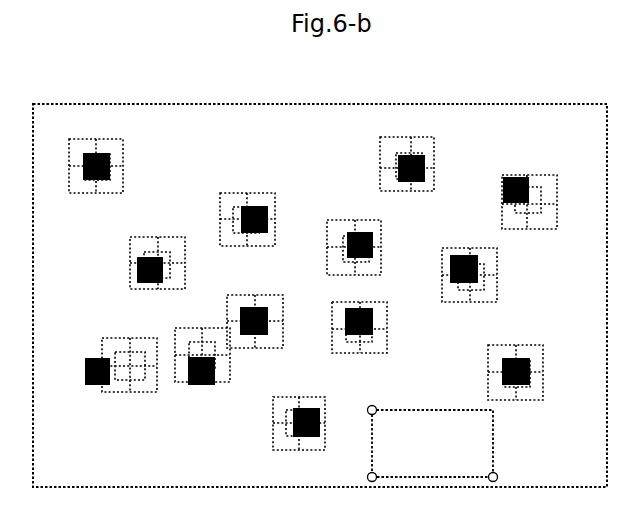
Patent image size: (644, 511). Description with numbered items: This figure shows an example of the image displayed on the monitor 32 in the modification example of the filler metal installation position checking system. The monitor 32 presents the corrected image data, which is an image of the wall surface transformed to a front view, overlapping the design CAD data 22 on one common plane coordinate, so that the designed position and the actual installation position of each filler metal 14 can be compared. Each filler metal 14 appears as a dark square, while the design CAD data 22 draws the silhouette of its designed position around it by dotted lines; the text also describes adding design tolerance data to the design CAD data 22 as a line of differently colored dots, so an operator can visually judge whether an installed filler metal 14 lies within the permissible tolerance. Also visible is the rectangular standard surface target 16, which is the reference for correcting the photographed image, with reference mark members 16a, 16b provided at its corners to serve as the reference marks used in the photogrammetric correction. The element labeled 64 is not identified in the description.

The monitor 32 is at (398, 104).
The design CAD data 22 is at (108, 356).
The inner detection window 64 is at (115, 340).
The filler metal 14 is at (90, 386).
The standard surface target 16 is at (416, 409).
The reference mark member 16a is at (367, 475).
The reference mark member 16b is at (368, 408).